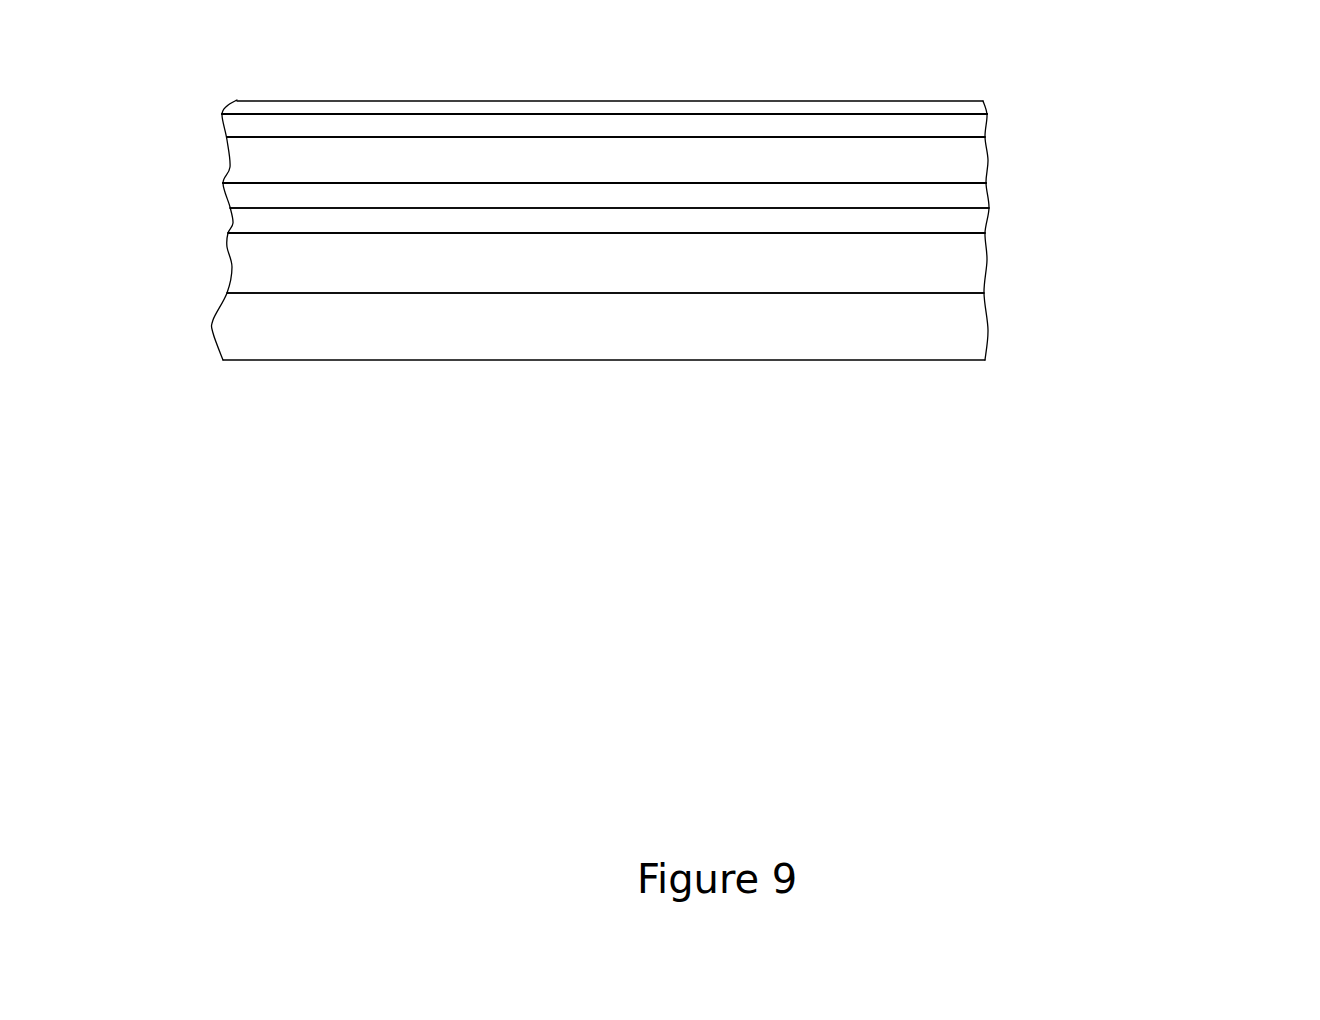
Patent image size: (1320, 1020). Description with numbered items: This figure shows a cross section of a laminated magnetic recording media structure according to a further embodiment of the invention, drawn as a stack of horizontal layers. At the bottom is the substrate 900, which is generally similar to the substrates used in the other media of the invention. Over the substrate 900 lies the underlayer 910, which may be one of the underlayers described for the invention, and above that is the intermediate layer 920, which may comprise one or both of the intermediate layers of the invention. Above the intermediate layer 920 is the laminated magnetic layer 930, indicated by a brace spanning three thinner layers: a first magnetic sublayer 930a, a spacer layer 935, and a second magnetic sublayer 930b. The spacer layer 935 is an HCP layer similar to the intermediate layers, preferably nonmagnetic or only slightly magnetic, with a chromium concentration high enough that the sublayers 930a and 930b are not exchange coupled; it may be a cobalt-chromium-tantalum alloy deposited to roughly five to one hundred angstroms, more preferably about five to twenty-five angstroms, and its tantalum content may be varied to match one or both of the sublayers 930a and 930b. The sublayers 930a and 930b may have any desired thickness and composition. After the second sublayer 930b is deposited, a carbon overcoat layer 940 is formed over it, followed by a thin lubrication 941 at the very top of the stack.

The substrate 900 is at (652, 469).
The underlayer 910 is at (988, 330).
The intermediate layer 920 is at (988, 262).
The laminated magnetic layer 930 is at (210, 137).
The first magnetic sublayer 930a is at (988, 222).
The spacer layer 935 is at (988, 194).
The second magnetic sublayer 930b is at (988, 169).
The carbon overcoat layer 940 is at (988, 122).
The lubrication 941 is at (988, 102).